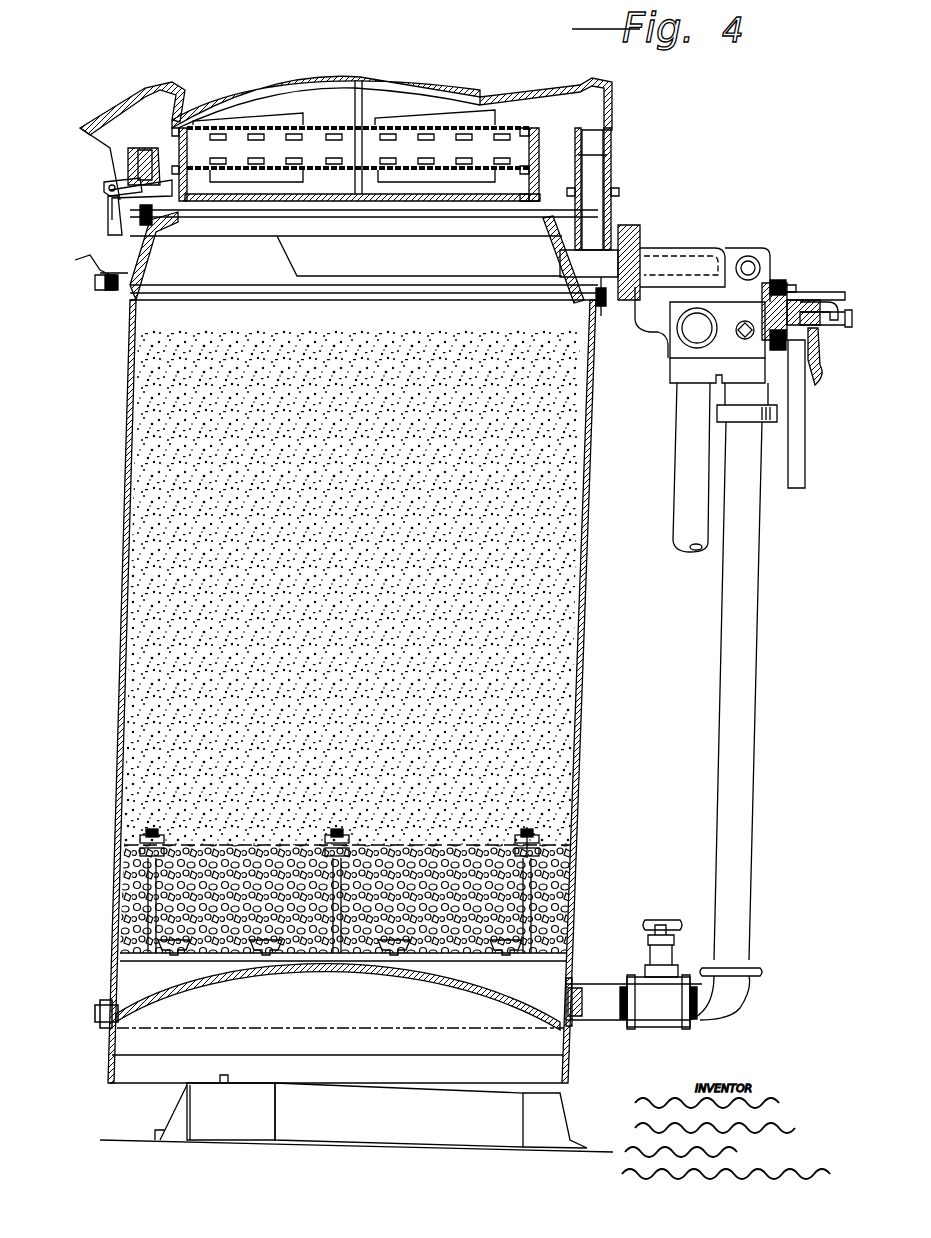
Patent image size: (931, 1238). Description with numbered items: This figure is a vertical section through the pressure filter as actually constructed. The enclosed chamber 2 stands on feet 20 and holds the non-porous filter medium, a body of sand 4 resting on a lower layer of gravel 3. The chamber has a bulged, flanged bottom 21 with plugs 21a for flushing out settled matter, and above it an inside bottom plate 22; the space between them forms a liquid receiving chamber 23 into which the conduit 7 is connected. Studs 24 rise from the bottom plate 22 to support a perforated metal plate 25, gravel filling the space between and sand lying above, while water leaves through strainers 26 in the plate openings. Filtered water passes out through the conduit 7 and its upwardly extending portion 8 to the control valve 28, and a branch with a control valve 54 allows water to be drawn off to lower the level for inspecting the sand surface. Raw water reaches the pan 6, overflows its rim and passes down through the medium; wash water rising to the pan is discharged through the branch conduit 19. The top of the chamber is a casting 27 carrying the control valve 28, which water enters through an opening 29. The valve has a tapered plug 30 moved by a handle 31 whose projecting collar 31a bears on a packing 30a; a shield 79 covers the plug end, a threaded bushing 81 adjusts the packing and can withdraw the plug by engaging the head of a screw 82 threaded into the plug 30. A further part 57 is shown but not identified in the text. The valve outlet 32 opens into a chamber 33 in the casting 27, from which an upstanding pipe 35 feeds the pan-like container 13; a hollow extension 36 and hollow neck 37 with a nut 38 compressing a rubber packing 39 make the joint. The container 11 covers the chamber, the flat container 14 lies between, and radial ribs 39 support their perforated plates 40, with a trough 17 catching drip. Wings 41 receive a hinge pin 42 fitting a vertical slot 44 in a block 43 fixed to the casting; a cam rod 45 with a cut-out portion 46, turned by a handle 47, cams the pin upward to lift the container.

The chamber 2 is at (572, 660).
The lower layer of gravel 3 is at (120, 895).
The body of sand 4 is at (138, 600).
The pan 6 is at (346, 256).
The conduit 7 is at (608, 1005).
The upwardly extending portion 8 is at (750, 795).
The container 11 is at (272, 214).
The pan-like container 13 is at (280, 95).
The flat container 14 is at (232, 125).
The trough 17 is at (85, 275).
The branch conduit 19 is at (680, 460).
The feet 20 is at (280, 1110).
The flanged bottom 21 is at (452, 988).
The plugs 21a is at (84, 1011).
The inside bottom plate 22 is at (548, 945).
The liquid receiving chamber 23 is at (340, 1009).
The studs 24 is at (125, 860).
The perforated metal plate 25 is at (545, 830).
The strainers 26 is at (125, 940).
The casting 27 is at (160, 250).
The control valve 28 is at (732, 258).
The opening 29 is at (672, 345).
The tapered plug 30 is at (800, 290).
The packing 30a is at (780, 280).
The handle 31 is at (806, 478).
The projecting collar 31a is at (800, 290).
The outlet 32 is at (655, 262).
The chamber 33 is at (603, 316).
The upstanding pipe 35 is at (615, 240).
The hollow extension 36 is at (540, 100).
The hollow neck 37 is at (610, 150).
The nut 38 is at (618, 195).
The radially extending ribs 39 is at (305, 78).
The perforated plates 40 is at (372, 127).
The wings 41 is at (140, 95).
The hinge pin 42 is at (125, 178).
The block 43 is at (140, 148).
The vertically extending slot 44 is at (130, 160).
The cam rod 45 is at (104, 186).
The cut out portion 46 is at (160, 215).
The handle 47 is at (108, 222).
The control valve 54 is at (668, 920).
The seal ring 57 is at (775, 282).
The shield 79 is at (830, 300).
The threaded bushing 81 is at (828, 345).
The screw 82 is at (850, 310).